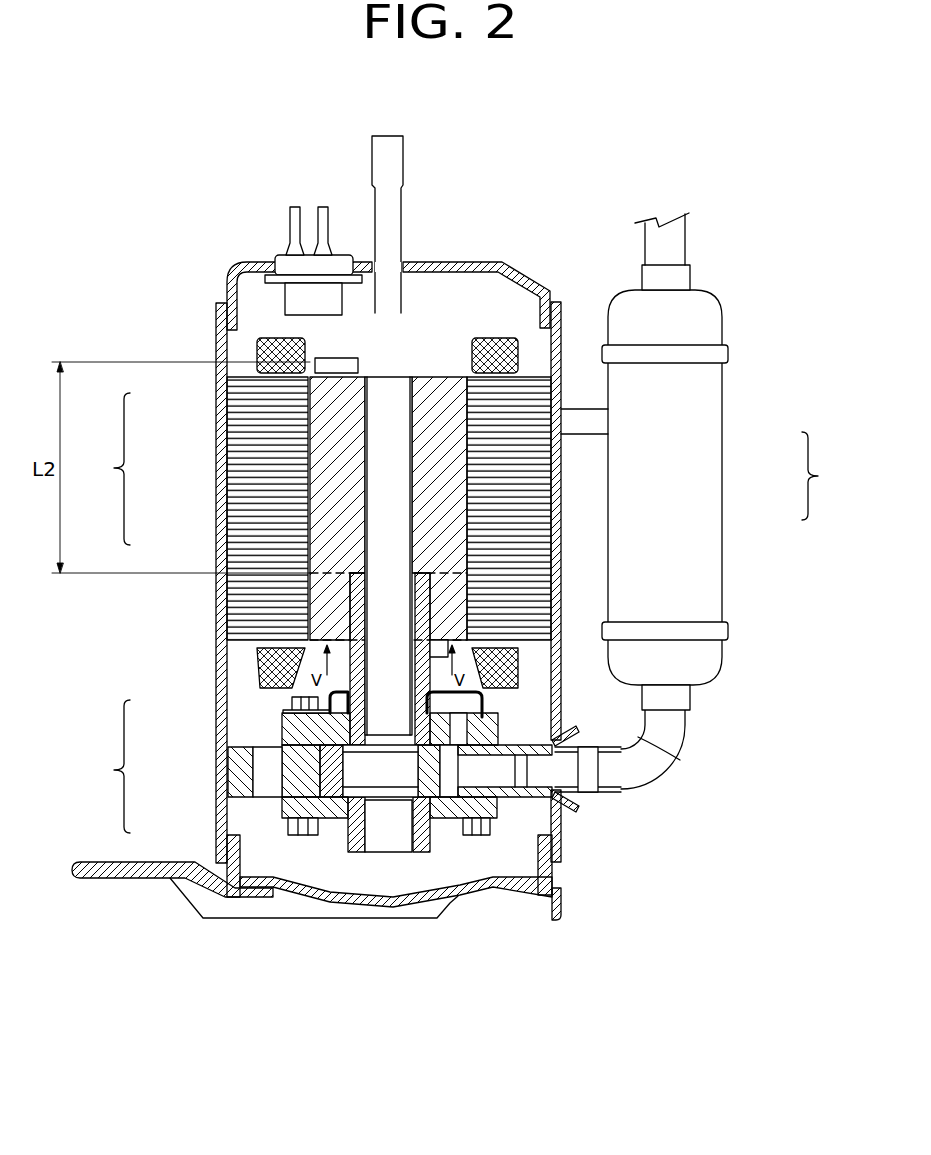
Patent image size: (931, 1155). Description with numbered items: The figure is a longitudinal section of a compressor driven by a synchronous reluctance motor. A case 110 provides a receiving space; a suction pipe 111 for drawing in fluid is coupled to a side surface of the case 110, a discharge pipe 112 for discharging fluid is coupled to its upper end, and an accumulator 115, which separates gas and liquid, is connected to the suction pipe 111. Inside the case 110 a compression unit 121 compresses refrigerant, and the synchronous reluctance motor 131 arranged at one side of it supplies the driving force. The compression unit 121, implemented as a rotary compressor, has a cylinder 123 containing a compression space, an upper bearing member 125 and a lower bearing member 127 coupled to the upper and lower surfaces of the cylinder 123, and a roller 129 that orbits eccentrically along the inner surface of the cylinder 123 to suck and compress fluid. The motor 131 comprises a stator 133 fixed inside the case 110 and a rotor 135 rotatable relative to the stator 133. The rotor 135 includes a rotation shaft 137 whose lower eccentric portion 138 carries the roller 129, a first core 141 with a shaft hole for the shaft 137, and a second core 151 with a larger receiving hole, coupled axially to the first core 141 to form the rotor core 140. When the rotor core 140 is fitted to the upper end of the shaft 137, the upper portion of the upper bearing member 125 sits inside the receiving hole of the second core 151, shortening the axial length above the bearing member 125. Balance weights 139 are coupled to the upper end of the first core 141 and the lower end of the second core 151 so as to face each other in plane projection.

The case 110 is at (240, 268).
The discharge pipe 112 is at (400, 160).
The accumulator 115 is at (697, 317).
The balance weight 139 is at (337, 367).
The synchronous reluctance motor 131 is at (104, 469).
The stator 133 is at (250, 412).
The rotor 135 is at (329, 472).
The rotation shaft 137 is at (380, 520).
The first core 141 is at (440, 457).
The second core 151 is at (467, 600).
The rotor core 140 is at (857, 482).
The compression unit 121 is at (112, 785).
The upper bearing member 125 is at (293, 728).
The cylinder 123 is at (293, 758).
The roller 129 is at (320, 779).
The lower bearing member 127 is at (293, 810).
The suction pipe 111 is at (600, 795).
The eccentric portion 138 is at (373, 773).